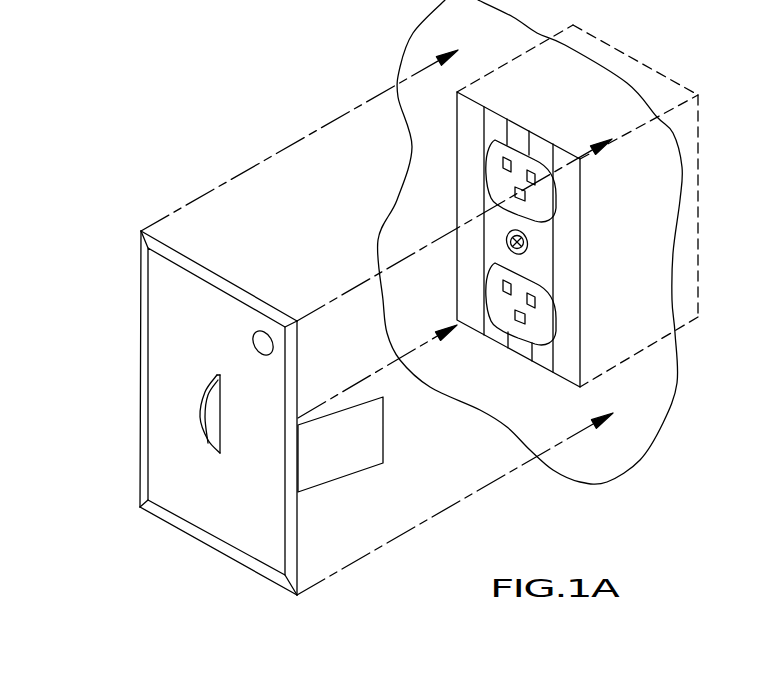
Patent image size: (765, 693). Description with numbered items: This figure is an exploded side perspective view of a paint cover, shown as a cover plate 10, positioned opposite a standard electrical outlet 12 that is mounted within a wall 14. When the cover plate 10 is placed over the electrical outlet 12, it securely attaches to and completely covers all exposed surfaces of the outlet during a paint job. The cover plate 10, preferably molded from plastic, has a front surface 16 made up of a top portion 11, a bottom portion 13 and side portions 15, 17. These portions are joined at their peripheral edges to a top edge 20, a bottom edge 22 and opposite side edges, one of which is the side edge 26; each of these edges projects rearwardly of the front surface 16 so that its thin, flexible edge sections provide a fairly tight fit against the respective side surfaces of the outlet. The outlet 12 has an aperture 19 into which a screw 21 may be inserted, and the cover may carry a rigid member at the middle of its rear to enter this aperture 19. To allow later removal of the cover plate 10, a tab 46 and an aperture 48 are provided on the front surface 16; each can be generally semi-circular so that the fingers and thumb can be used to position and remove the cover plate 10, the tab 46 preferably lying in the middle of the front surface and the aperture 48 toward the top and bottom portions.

The cover plate 10 is at (147, 123).
The top portion 11 is at (216, 411).
The electrical outlet 12 is at (440, 211).
The bottom portion 13 is at (217, 516).
The wall 14 is at (517, 413).
The side portion 15 is at (167, 388).
The front surface 16 is at (145, 350).
The side portion 17 is at (265, 439).
The aperture 19 is at (523, 250).
The top edge 20 is at (213, 280).
The screw 21 is at (510, 247).
The bottom edge 22 is at (212, 542).
The side edge 26 is at (293, 535).
The tab 46 is at (213, 427).
The aperture 48 is at (253, 333).